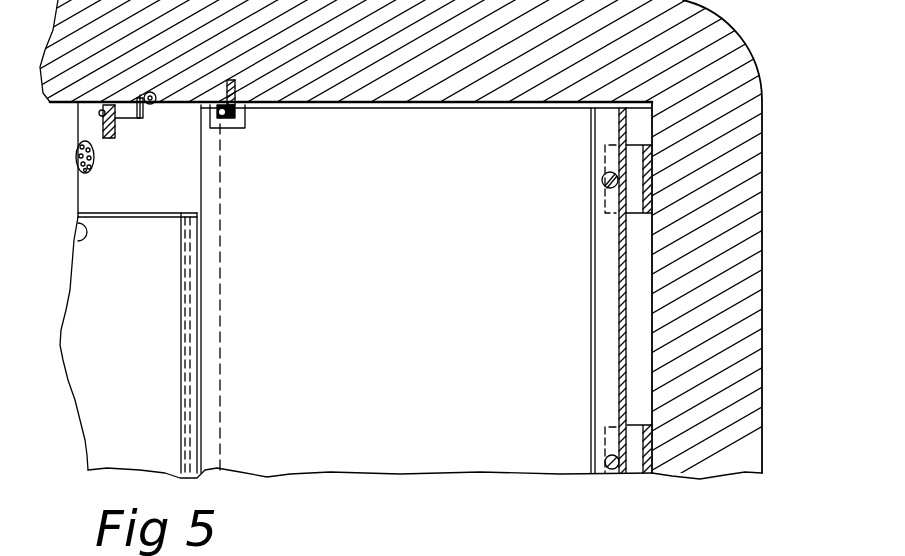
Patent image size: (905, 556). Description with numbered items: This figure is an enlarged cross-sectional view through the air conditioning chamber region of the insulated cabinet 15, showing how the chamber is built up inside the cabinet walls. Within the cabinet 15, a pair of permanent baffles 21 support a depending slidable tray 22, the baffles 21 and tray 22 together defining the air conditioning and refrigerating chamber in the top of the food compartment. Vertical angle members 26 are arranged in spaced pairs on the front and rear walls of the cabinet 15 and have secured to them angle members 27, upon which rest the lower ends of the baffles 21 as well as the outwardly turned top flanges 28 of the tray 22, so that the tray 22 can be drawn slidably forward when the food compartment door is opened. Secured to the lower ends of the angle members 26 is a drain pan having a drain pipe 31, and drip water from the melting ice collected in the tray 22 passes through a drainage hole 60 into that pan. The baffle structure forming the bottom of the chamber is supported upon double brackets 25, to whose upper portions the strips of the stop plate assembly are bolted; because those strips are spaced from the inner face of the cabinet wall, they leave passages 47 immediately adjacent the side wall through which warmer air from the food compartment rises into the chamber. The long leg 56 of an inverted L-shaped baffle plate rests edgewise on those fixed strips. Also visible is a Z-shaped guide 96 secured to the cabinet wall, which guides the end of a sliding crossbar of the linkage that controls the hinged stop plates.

The cabinet 15 is at (520, 73).
The permanent baffles 21 is at (483, 432).
The slidable tray 22 is at (143, 213).
The double brackets 25 is at (633, 192).
The vertical angle members 26 is at (230, 123).
The angle members 27 is at (193, 165).
The outwardly turned top flanges 28 is at (182, 253).
The drain pipe 31 is at (76, 157).
The passages 47 is at (638, 303).
The long leg 56 is at (625, 242).
The drainage hole 60 is at (83, 238).
The Z-shaped guides 96 is at (133, 122).